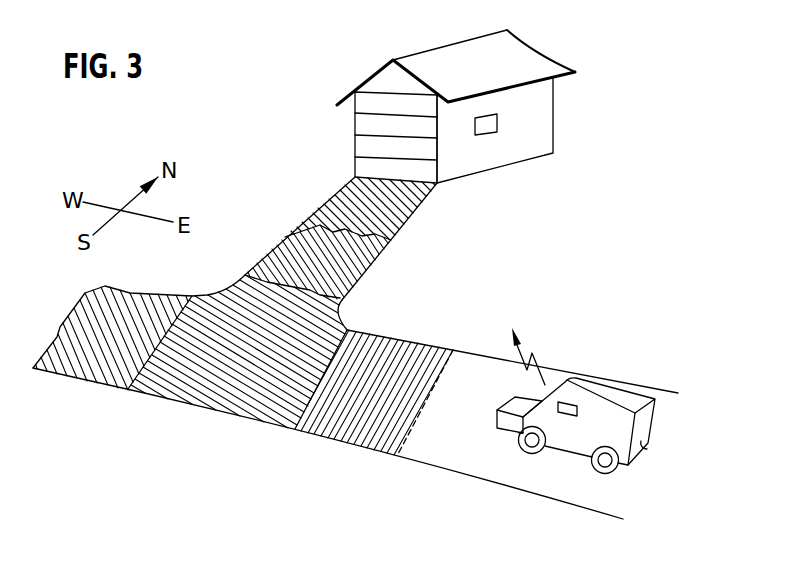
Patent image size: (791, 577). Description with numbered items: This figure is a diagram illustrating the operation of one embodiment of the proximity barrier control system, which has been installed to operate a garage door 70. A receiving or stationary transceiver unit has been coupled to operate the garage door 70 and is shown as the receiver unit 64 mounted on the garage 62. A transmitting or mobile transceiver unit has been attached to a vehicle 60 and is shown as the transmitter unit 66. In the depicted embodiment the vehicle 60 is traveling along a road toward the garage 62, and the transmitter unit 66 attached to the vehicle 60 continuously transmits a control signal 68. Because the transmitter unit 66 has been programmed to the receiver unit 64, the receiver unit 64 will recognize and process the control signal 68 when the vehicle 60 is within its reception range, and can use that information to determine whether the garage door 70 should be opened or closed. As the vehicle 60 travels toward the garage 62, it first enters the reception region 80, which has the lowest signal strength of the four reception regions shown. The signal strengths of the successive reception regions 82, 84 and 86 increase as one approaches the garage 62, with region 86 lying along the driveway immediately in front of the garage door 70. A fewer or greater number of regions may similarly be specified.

The vehicle 60 is at (576, 387).
The garage 62 is at (440, 116).
The receiver unit 64 is at (498, 123).
The transmitter unit 66 is at (559, 401).
The control signal 68 is at (521, 345).
The garage door 70 is at (365, 128).
The reception region 80 is at (362, 422).
The reception region 82 is at (220, 392).
The reception region 84 is at (302, 258).
The reception region 86 is at (347, 205).